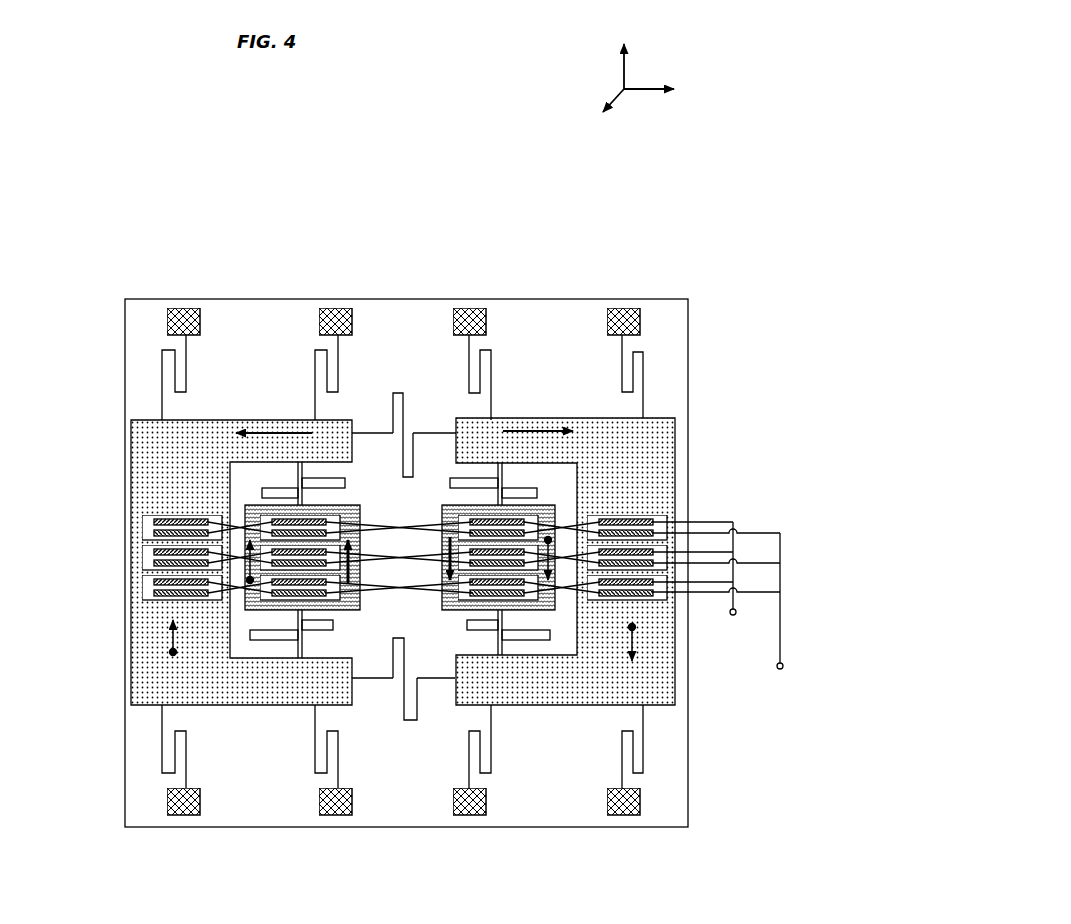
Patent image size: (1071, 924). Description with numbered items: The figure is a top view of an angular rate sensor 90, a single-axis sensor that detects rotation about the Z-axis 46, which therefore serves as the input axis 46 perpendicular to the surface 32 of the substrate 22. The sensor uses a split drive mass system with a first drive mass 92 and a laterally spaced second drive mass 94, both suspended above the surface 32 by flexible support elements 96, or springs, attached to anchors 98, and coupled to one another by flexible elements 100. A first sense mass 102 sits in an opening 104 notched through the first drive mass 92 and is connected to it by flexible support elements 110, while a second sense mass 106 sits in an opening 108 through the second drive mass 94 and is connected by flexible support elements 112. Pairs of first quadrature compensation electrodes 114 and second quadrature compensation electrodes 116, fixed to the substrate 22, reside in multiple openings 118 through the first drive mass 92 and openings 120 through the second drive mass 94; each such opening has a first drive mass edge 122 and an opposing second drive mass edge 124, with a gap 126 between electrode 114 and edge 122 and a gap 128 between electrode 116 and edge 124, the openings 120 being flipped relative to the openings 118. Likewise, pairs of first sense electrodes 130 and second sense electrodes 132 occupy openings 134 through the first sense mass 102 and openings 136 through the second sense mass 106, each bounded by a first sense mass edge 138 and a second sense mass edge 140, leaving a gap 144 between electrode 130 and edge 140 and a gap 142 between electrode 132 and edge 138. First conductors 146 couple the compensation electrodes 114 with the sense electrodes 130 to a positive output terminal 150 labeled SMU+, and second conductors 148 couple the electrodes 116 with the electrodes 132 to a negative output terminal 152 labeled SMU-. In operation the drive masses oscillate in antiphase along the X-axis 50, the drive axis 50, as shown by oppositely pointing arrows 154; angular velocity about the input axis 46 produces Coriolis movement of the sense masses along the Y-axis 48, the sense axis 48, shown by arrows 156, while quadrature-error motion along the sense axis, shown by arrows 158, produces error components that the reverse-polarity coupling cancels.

The substrate 22 is at (200, 298).
The surface 32 is at (255, 333).
The Z-axis 46 is at (619, 97).
The Y-axis 48 is at (624, 70).
The X-axis 50 is at (643, 93).
The angular rate sensor 90 is at (449, 539).
The first drive mass 92 is at (140, 425).
The second drive mass 94 is at (675, 420).
The flexible support elements 96 is at (187, 370).
The anchors 98 is at (183, 308).
The flexible elements 100 is at (400, 393).
The first sense mass 102 is at (248, 655).
The opening 104 is at (360, 468).
The second sense mass 106 is at (650, 418).
The opening 108 is at (441, 468).
The flexible support elements 110 is at (302, 488).
The flexible support elements 112 is at (498, 494).
The first quadrature compensation electrodes 114 is at (172, 548).
The second quadrature compensation electrodes 116 is at (158, 521).
The openings 118 is at (146, 530).
The openings 120 is at (595, 513).
The first drive mass edge 122 is at (162, 576).
The second drive mass edge 124 is at (175, 516).
The gap 126 is at (165, 597).
The gap 128 is at (172, 546).
The first sense electrodes 130 is at (343, 506).
The second sense electrodes 132 is at (472, 518).
The openings 134 is at (257, 516).
The openings 136 is at (588, 418).
The first sense mass edge 138 is at (298, 665).
The second sense mass edge 140 is at (229, 500).
The gap 142 is at (452, 611).
The gap 144 is at (424, 678).
The first conductors 146 is at (733, 520).
The second conductors 148 is at (748, 534).
The positive output terminal 150 is at (737, 611).
The negative output terminal 152 is at (777, 668).
The arrows 154 is at (247, 427).
The arrows 156 is at (133, 650).
The arrows 158 is at (450, 565).